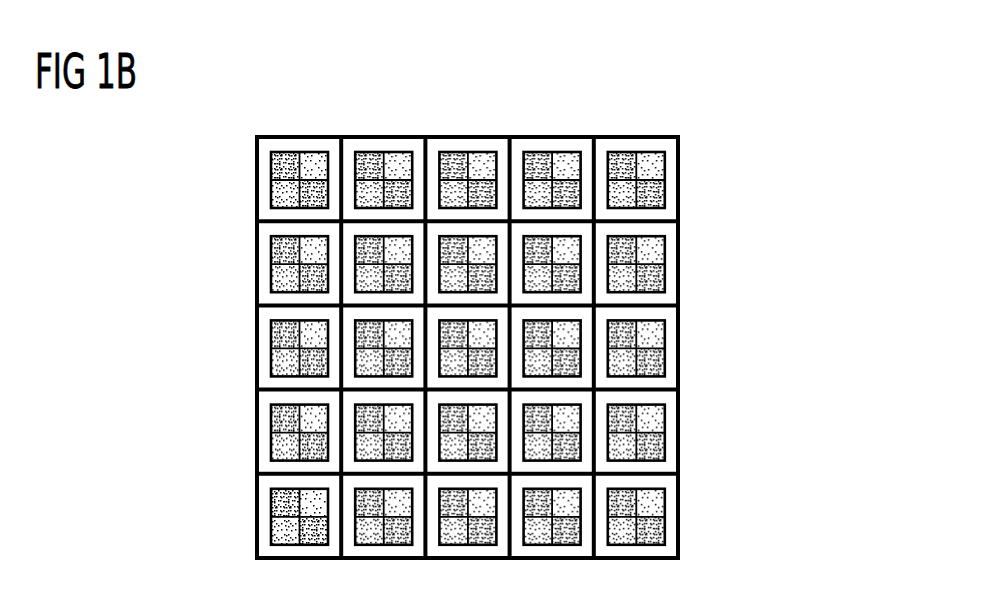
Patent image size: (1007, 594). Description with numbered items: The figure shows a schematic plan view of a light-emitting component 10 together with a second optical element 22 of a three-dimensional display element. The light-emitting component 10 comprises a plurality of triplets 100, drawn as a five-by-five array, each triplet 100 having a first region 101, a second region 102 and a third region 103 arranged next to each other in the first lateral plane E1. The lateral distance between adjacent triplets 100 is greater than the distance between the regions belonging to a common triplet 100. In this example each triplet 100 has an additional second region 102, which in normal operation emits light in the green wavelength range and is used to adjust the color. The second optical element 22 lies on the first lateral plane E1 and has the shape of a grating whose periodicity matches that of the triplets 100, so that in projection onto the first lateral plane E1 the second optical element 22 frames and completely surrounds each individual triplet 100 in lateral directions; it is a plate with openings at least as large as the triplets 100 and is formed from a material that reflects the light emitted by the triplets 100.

The light-emitting component 10 is at (697, 118).
The second optical element 22 is at (258, 220).
The triplet 100 is at (168, 453).
The first region 101 is at (272, 493).
The second region 102 is at (272, 506).
The third region 103 is at (272, 540).
The first lateral plane E1 is at (458, 78).